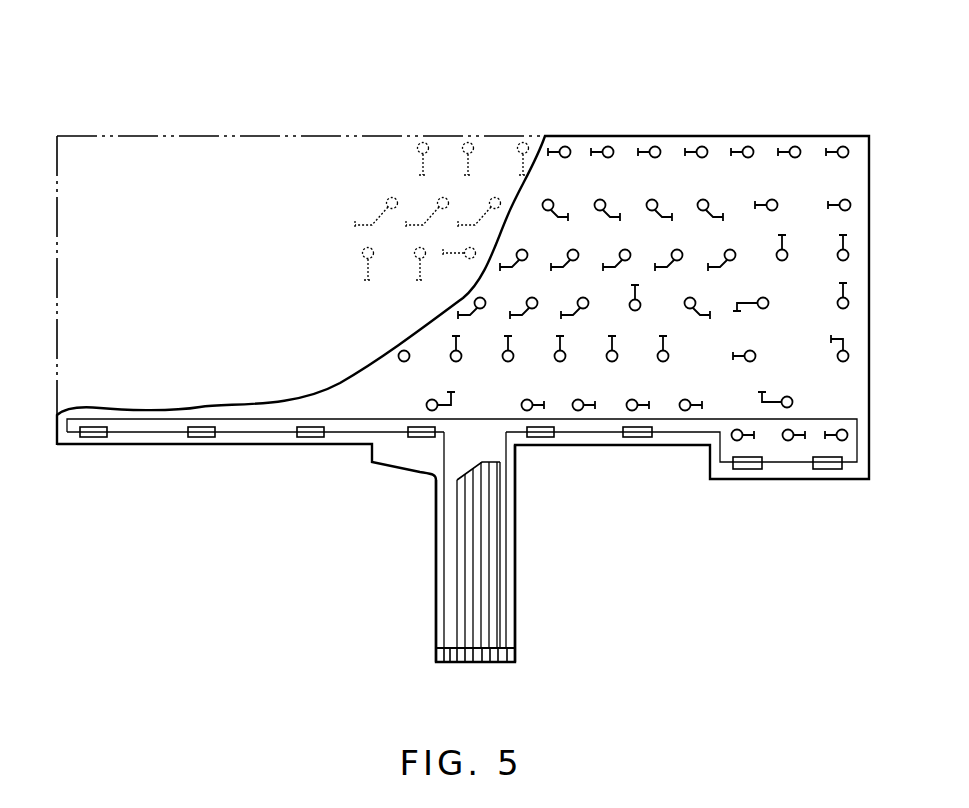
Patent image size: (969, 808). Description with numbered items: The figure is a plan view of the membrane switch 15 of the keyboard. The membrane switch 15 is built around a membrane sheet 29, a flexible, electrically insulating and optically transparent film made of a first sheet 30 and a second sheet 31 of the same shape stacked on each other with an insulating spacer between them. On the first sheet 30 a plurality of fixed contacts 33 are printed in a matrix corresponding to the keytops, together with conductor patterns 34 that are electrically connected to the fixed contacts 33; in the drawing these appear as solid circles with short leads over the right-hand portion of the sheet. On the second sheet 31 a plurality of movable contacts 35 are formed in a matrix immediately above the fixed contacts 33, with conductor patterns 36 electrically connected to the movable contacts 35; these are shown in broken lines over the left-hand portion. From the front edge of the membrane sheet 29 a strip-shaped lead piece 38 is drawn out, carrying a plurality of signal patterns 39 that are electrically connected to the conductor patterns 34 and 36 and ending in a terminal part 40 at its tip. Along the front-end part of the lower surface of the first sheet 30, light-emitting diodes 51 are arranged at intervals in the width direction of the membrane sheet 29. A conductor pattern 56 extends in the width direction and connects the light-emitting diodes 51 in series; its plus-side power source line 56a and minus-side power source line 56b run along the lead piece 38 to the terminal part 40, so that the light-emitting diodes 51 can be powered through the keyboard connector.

The membrane switch 15 is at (680, 124).
The membrane sheet 29 is at (607, 83).
The first sheet 30 is at (585, 134).
The second sheet 31 is at (517, 134).
The fixed contact 33 is at (770, 200).
The conductor pattern 34 is at (738, 154).
The movable contact 35 is at (392, 197).
The conductor pattern 36 is at (424, 173).
The lead piece 38 is at (517, 578).
The signal pattern 39 is at (485, 543).
The terminal part 40 is at (500, 664).
The light-emitting diode 51 is at (93, 438).
The conductor pattern 56 is at (688, 433).
The plus-side power source line 56a is at (444, 607).
The minus-side power source line 56b is at (507, 531).